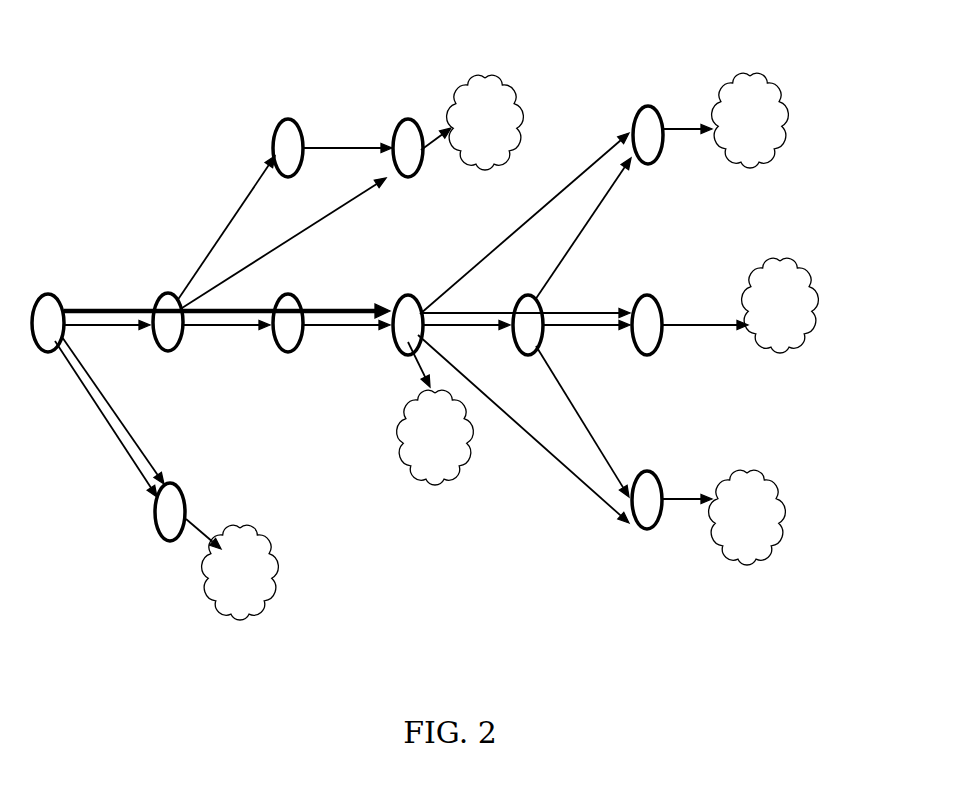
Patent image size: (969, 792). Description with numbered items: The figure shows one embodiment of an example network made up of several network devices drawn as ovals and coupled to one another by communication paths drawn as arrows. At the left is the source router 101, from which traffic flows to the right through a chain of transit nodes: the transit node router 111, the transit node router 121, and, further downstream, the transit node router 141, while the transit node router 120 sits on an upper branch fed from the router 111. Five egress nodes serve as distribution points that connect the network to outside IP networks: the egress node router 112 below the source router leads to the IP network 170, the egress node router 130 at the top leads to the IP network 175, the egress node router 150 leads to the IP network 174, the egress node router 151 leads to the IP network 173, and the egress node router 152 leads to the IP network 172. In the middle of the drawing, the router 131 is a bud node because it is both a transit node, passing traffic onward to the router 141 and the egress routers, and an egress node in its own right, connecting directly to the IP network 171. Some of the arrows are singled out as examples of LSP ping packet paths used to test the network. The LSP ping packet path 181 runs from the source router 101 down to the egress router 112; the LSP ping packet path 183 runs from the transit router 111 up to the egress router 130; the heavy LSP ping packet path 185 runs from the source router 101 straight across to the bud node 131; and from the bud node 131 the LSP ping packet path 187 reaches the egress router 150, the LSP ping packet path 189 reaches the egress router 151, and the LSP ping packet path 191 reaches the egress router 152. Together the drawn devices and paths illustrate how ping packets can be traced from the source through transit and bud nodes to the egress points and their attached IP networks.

The source router 101 is at (50, 293).
The transit node router 111 is at (160, 293).
The egress node router 112 is at (155, 520).
The transit node router 120 is at (273, 135).
The transit node router 121 is at (276, 346).
The egress node router 130 is at (393, 137).
The bud node router 131 is at (405, 295).
The transit node router 141 is at (528, 295).
The egress node router 150 is at (648, 105).
The egress node router 151 is at (650, 295).
The egress node router 152 is at (648, 470).
The IP network 170 is at (240, 572).
The IP network 171 is at (435, 437).
The IP network 172 is at (747, 517).
The IP network 173 is at (780, 305).
The IP network 174 is at (750, 120).
The IP network 175 is at (485, 122).
The LSP ping packet path 181 is at (117, 416).
The LSP ping packet path 183 is at (266, 254).
The LSP ping packet path 185 is at (306, 308).
The LSP ping packet path 187 is at (505, 239).
The LSP ping packet path 189 is at (591, 310).
The LSP ping packet path 191 is at (559, 463).